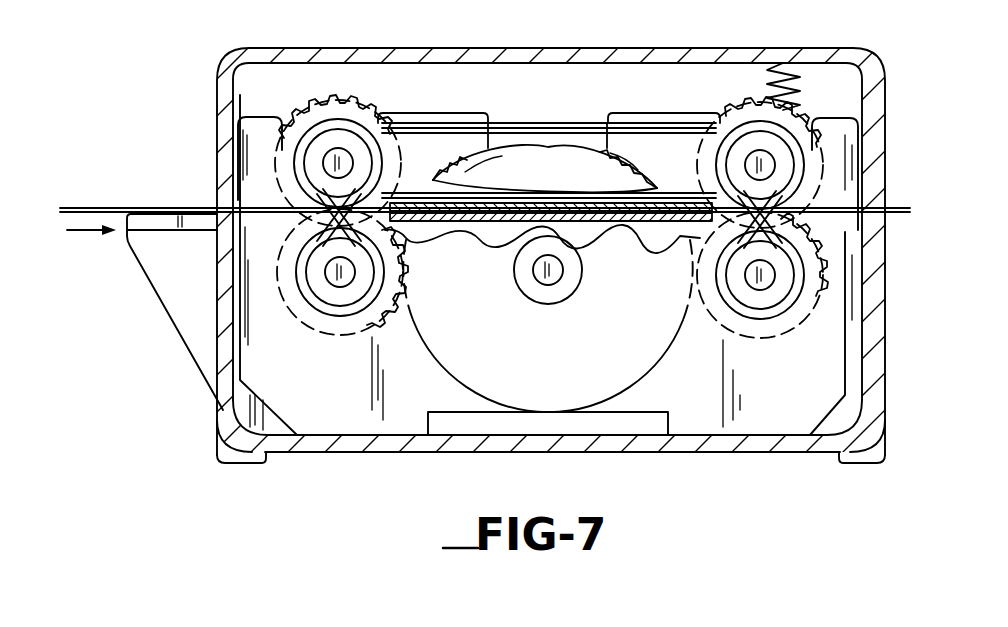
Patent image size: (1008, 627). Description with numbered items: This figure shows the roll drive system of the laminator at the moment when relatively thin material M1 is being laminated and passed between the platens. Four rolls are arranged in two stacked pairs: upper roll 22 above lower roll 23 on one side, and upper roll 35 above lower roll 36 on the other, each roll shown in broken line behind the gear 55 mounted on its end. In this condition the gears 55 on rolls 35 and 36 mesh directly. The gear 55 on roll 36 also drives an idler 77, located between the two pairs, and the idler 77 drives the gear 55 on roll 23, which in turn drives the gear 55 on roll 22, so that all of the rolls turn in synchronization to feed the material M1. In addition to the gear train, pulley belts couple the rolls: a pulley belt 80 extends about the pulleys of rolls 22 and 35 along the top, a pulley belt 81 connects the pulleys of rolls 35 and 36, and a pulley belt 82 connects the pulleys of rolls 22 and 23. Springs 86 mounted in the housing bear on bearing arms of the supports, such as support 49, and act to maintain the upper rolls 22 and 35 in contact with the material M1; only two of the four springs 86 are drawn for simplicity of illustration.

The thin material M1 is at (115, 207).
The roll 22 is at (392, 145).
The roll 23 is at (325, 317).
The roll 35 is at (708, 163).
The roll 36 is at (790, 318).
The gear 55 is at (340, 99).
The pulley belt 80 is at (560, 130).
The pulley belt 81 is at (705, 242).
The pulley belt 82 is at (385, 230).
The idler 77 is at (636, 364).
The support 49 is at (720, 403).
The spring 86 is at (790, 72).